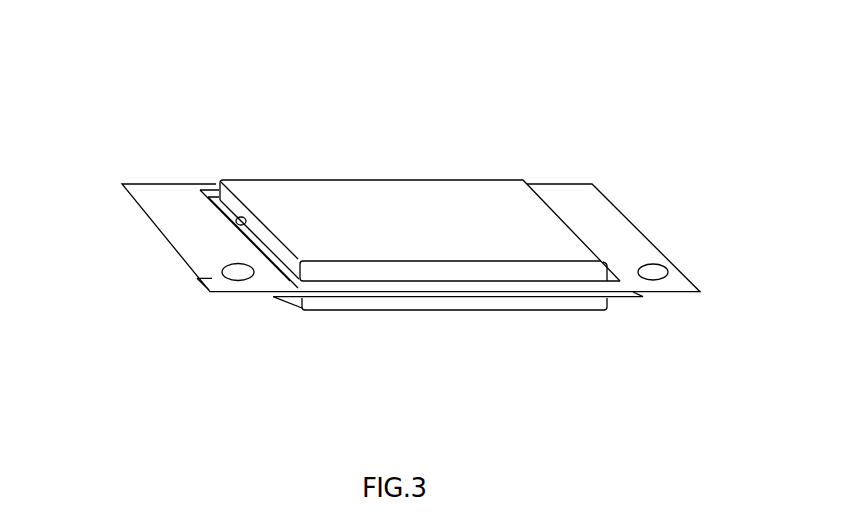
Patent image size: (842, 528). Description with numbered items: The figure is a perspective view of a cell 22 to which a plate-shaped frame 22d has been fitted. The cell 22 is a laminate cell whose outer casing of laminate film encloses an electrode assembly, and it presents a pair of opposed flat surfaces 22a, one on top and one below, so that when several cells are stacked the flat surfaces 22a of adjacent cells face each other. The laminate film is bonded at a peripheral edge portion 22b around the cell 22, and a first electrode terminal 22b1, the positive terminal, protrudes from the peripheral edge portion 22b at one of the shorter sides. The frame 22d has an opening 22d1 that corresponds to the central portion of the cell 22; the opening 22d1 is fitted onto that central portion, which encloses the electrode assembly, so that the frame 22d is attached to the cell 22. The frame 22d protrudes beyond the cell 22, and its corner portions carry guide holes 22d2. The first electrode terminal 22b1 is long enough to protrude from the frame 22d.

The cell 22 is at (305, 104).
The flat surface 22a is at (400, 204).
The peripheral edge portion 22b is at (216, 190).
The first electrode terminal 22b1 is at (199, 283).
The frame 22d is at (609, 207).
The opening 22d1 is at (236, 222).
The guide hole 22d2 is at (242, 277).